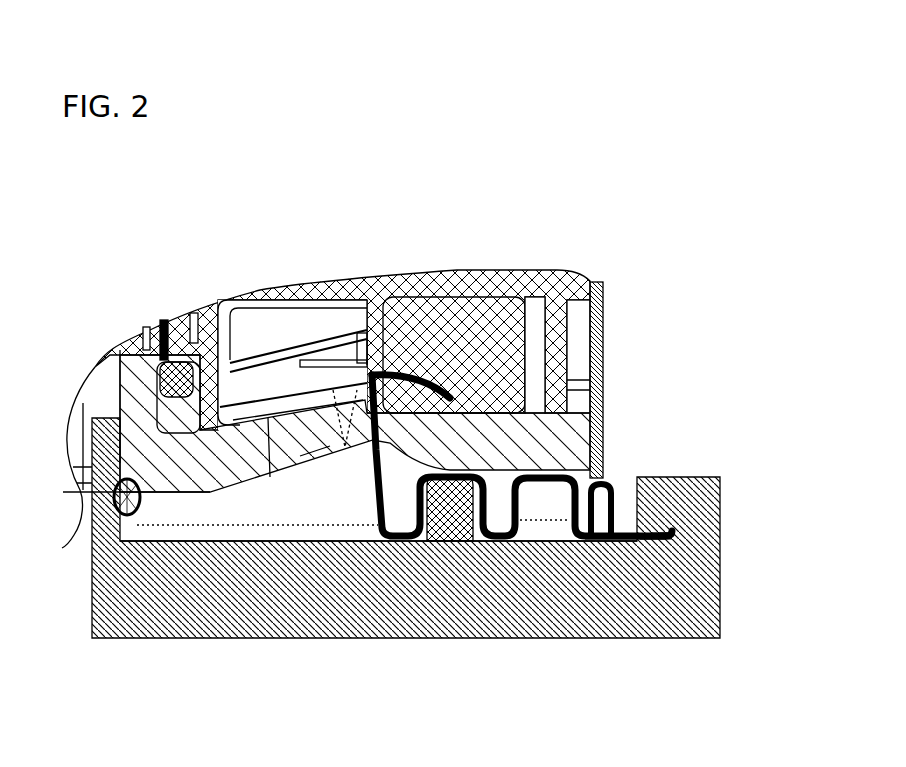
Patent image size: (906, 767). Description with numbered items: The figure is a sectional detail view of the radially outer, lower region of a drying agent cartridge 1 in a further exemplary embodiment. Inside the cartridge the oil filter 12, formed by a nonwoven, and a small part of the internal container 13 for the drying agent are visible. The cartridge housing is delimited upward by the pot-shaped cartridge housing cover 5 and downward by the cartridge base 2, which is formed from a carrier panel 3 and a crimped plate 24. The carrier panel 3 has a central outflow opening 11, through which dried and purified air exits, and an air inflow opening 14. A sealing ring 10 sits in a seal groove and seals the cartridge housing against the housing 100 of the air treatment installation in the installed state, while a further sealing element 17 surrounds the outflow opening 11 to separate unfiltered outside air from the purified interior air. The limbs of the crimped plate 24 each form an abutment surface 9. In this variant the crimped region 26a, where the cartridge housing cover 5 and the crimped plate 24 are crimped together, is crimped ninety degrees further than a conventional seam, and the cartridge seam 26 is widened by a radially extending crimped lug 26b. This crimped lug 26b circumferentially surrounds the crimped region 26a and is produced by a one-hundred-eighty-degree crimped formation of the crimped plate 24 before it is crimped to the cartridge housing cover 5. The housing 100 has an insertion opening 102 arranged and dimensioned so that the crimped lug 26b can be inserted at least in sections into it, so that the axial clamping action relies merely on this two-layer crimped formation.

The drying agent cartridge 1 is at (394, 435).
The cartridge base 2 is at (576, 539).
The carrier panel 3 is at (603, 420).
The cartridge housing cover 5 is at (603, 327).
The abutment surface 9 is at (644, 547).
The sealing ring 10 is at (393, 540).
The outflow opening 11 is at (62, 548).
The oil filter 12 is at (500, 327).
The internal container 13 is at (467, 270).
The air inflow opening 14 is at (313, 445).
The sealing element 17 is at (130, 515).
The crimped plate 24 is at (458, 530).
The widened cartridge seam 26 is at (615, 552).
The crimped region of the cartridge seam 26a is at (623, 495).
The crimped lug 26b is at (673, 527).
The housing of the air treatment installation 100 is at (528, 612).
The insertion opening 102 is at (675, 540).